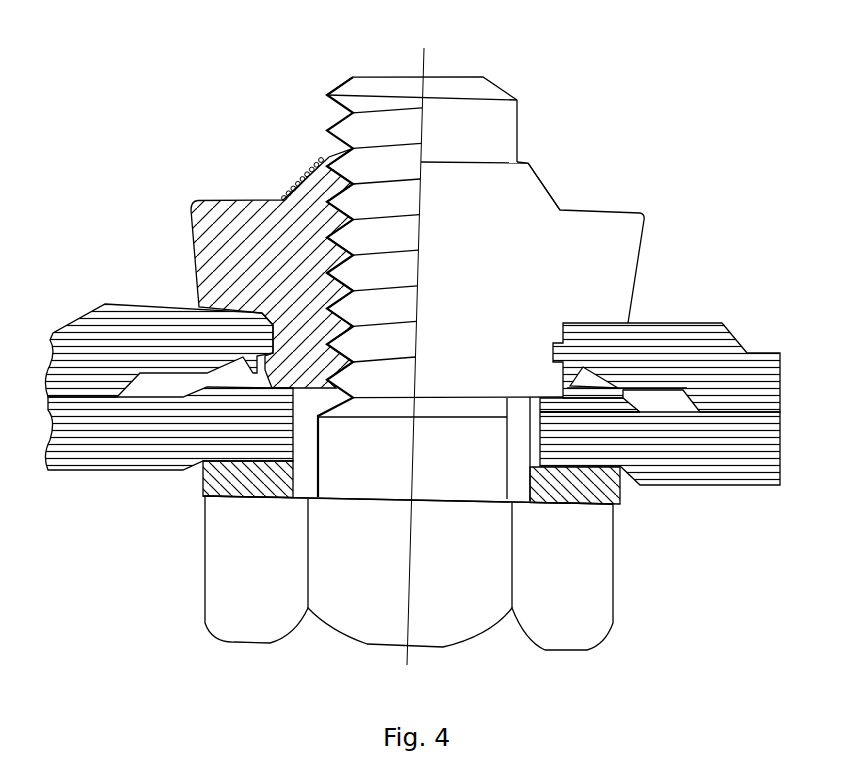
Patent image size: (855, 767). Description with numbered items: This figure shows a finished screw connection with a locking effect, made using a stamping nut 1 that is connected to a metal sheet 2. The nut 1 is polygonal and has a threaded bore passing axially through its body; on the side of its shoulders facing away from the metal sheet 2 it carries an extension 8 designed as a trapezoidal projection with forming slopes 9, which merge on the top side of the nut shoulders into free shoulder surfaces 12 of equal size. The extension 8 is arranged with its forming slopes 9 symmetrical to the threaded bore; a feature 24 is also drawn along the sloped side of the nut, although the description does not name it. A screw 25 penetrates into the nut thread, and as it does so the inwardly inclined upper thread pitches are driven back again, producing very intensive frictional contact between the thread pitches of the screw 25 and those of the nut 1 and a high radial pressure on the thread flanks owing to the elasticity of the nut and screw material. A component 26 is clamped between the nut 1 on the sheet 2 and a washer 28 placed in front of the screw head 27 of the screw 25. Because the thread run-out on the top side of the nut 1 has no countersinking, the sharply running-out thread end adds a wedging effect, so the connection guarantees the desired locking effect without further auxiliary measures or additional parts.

The nut 1 is at (545, 277).
The metal sheet 2 is at (683, 347).
The extension 8 is at (525, 190).
The forming slopes 9 is at (550, 193).
The free shoulder surfaces 12 is at (230, 198).
The sealing bead 24 is at (297, 170).
The screw 25 is at (420, 125).
The component 26 is at (707, 460).
The screw head 27 is at (248, 600).
The washer 28 is at (233, 477).